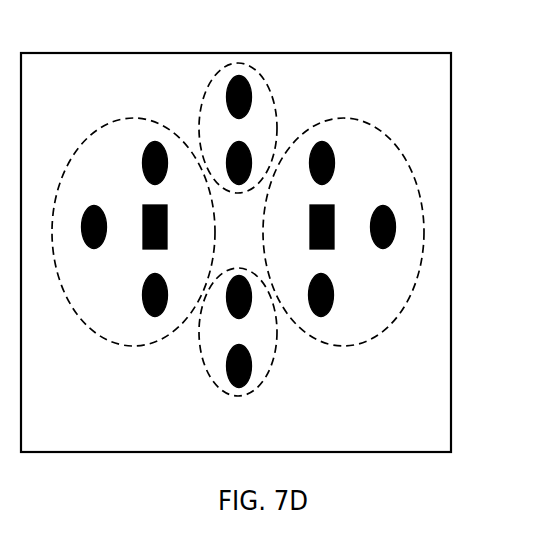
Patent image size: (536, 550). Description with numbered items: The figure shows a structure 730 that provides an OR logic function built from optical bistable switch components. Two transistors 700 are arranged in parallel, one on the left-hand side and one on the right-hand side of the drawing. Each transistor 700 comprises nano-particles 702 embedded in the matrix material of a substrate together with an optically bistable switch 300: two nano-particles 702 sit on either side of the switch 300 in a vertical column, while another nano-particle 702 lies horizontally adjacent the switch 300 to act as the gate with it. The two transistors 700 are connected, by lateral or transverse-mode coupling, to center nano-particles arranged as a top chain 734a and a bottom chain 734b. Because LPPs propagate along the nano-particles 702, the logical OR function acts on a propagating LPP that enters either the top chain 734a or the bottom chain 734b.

The structure for an OR logic function 730 is at (391, 43).
The transistor 700 is at (386, 136).
The nano-particles 702 is at (85, 210).
The optically bistable switch 300 is at (143, 248).
The top chain of nano-particles 734a is at (278, 106).
The bottom chain of nano-particles 734b is at (268, 374).